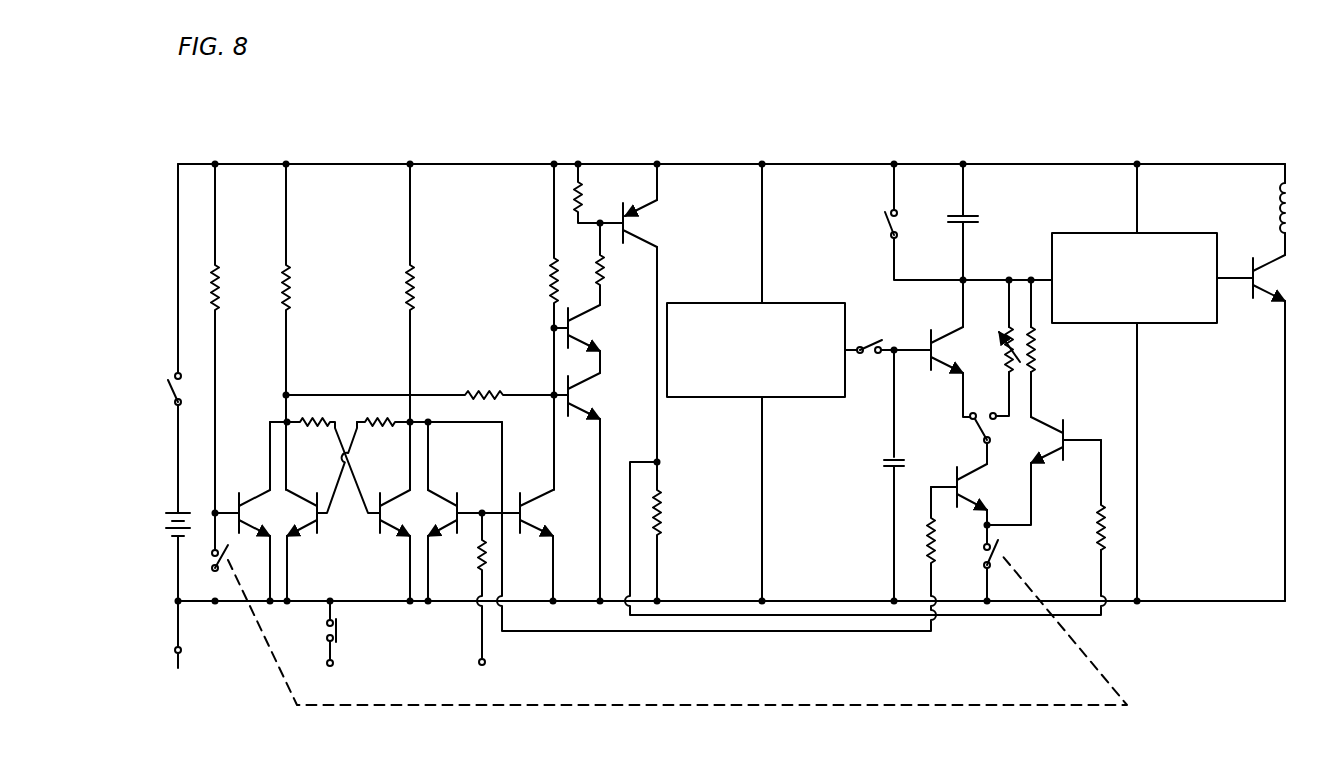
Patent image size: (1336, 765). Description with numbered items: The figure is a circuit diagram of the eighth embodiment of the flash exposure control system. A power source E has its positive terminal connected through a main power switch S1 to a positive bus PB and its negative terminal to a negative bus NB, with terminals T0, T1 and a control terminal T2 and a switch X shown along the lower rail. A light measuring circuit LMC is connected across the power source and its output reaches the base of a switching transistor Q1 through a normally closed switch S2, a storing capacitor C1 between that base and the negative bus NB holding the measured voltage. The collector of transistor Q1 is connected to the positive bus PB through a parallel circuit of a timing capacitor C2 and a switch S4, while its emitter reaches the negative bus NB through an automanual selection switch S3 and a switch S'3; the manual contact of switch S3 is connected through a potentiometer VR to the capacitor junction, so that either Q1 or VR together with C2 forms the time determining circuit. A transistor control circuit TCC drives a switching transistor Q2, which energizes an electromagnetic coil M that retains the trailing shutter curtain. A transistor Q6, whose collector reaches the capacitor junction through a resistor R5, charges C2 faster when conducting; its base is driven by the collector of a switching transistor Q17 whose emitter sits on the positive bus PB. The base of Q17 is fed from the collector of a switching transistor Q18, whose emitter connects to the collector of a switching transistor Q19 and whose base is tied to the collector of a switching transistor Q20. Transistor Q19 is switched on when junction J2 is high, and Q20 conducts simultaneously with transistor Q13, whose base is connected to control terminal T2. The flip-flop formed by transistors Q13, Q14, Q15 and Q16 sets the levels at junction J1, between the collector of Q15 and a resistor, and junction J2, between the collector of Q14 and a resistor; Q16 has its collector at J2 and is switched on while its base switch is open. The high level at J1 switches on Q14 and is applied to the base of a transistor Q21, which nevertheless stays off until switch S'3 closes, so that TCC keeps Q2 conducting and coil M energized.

The positive bus PB is at (718, 164).
The negative bus NB is at (1185, 604).
The main power switch S1 is at (170, 383).
The power source E is at (168, 526).
The terminal T0 is at (176, 674).
The terminal T1 is at (331, 680).
The control terminal T2 is at (481, 680).
The switch X is at (348, 628).
The transistor Q16 is at (262, 498).
The transistor Q14 is at (300, 540).
The transistor Q15 is at (395, 540).
The transistor Q13 is at (462, 496).
The switching transistor Q20 is at (528, 512).
The junction J2 is at (287, 420).
The junction J1 is at (409, 425).
The switching transistor Q18 is at (580, 326).
The switching transistor Q19 is at (580, 397).
The switching transistor Q17 is at (640, 228).
The light measuring circuit LMC is at (722, 303).
The switch S4 is at (886, 217).
The timing capacitor C2 is at (980, 218).
The transistor control circuit TCC is at (1090, 233).
The electromagnetic coil M is at (1278, 208).
The switching transistor Q2 is at (1262, 280).
The switch S2 is at (862, 343).
The switching transistor Q1 is at (950, 330).
The storing capacitor C1 is at (884, 462).
The potentiometer VR is at (1015, 358).
The resistor R5 is at (1038, 350).
The automanual selection switch S3 is at (972, 431).
The transistor Q6 is at (1068, 427).
The transistor Q21 is at (972, 505).
The switch S'3 is at (1026, 551).